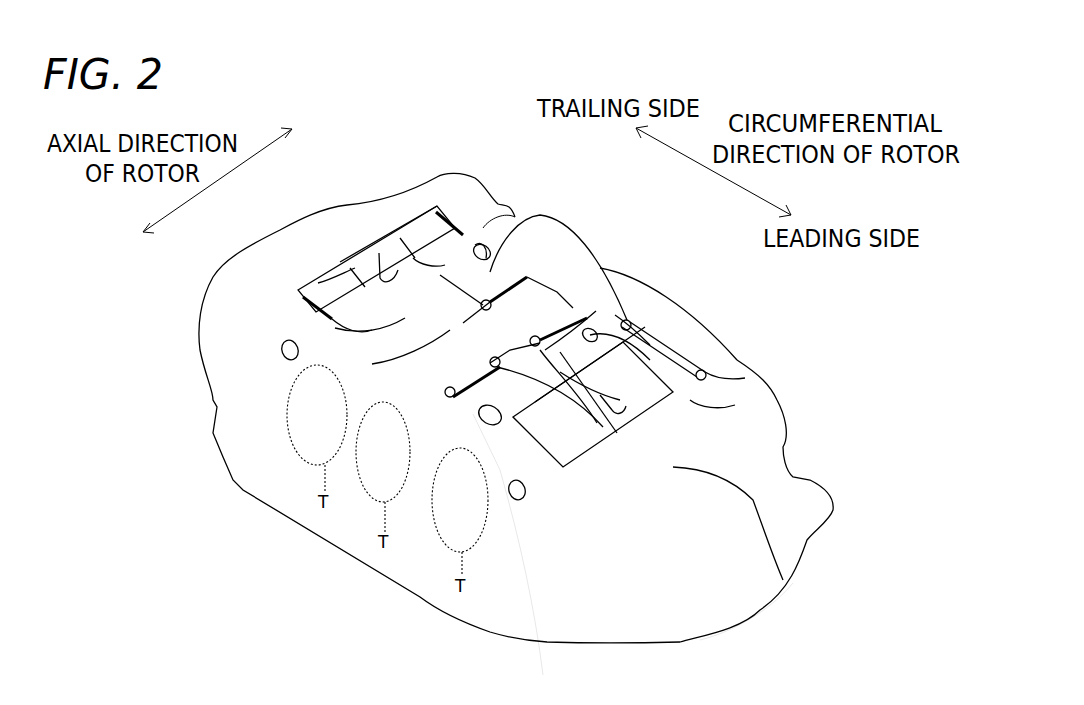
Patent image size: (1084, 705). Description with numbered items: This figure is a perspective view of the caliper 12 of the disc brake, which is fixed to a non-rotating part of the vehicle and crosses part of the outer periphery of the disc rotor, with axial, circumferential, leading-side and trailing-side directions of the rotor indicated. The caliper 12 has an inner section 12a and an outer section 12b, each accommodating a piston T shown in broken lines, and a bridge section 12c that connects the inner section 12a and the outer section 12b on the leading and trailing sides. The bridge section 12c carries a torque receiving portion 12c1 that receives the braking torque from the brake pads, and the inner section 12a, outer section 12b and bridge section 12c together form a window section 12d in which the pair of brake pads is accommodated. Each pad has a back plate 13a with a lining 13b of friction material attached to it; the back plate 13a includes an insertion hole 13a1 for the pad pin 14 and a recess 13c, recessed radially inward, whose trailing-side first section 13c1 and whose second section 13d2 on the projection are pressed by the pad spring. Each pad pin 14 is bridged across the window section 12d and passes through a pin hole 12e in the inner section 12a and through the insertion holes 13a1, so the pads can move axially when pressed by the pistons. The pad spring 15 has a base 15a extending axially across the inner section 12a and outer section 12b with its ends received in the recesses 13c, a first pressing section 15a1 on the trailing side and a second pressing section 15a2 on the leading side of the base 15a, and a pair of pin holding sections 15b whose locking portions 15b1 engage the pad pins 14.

The caliper 12 is at (675, 670).
The inner section 12a is at (273, 430).
The outer section 12b is at (487, 238).
The bridge section 12c is at (276, 237).
The torque receiving portion 12c1 is at (340, 262).
The window section 12d is at (318, 283).
The pin hole 12e is at (280, 352).
The back plate 13a is at (590, 335).
The insertion hole 13a1 is at (435, 250).
The lining 13b is at (560, 372).
The recess 13c is at (598, 308).
The first section 13c1 is at (372, 364).
The second section 13d2 is at (615, 315).
The pad pin 14 is at (413, 258).
The pad spring 15 is at (565, 288).
The base 15a is at (452, 412).
The first pressing section 15a1 is at (488, 300).
The second pressing section 15a2 is at (617, 288).
The pin holding section 15b is at (413, 267).
The locking portion 15b1 is at (378, 260).